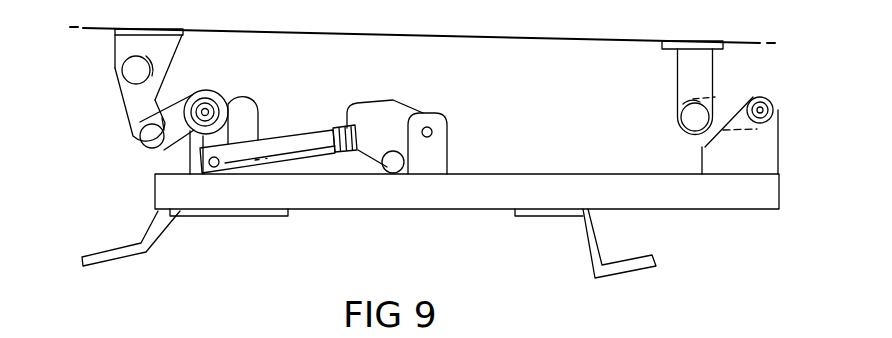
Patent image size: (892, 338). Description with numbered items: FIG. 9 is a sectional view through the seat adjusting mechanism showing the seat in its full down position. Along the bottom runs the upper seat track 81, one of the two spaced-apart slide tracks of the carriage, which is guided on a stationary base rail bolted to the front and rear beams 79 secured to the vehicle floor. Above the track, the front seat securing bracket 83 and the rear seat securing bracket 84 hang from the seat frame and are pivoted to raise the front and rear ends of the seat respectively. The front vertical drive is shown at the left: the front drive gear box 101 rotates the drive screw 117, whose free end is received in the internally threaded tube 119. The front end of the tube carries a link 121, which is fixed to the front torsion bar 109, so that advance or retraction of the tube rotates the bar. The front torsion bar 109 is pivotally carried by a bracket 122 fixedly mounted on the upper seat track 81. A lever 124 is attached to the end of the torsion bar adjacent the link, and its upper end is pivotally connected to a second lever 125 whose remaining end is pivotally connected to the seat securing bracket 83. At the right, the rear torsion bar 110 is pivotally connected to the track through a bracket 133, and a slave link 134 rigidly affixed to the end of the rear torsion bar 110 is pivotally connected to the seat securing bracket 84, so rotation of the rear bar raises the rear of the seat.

The beam 79 is at (160, 241).
The upper seat track 81 is at (545, 178).
The seat securing bracket 83 is at (123, 47).
The seat securing bracket 84 is at (684, 80).
The front drive gear box 101 is at (402, 117).
The front torsion bar 109 is at (236, 101).
The rear torsion bar 110 is at (775, 108).
The drive screw 117 is at (343, 127).
The internally threaded tube 119 is at (317, 138).
The link 121 is at (212, 97).
The bracket 122 is at (188, 160).
The lever 124 is at (168, 140).
The second lever 125 is at (133, 105).
The bracket 133 is at (760, 155).
The slave link 134 is at (721, 104).